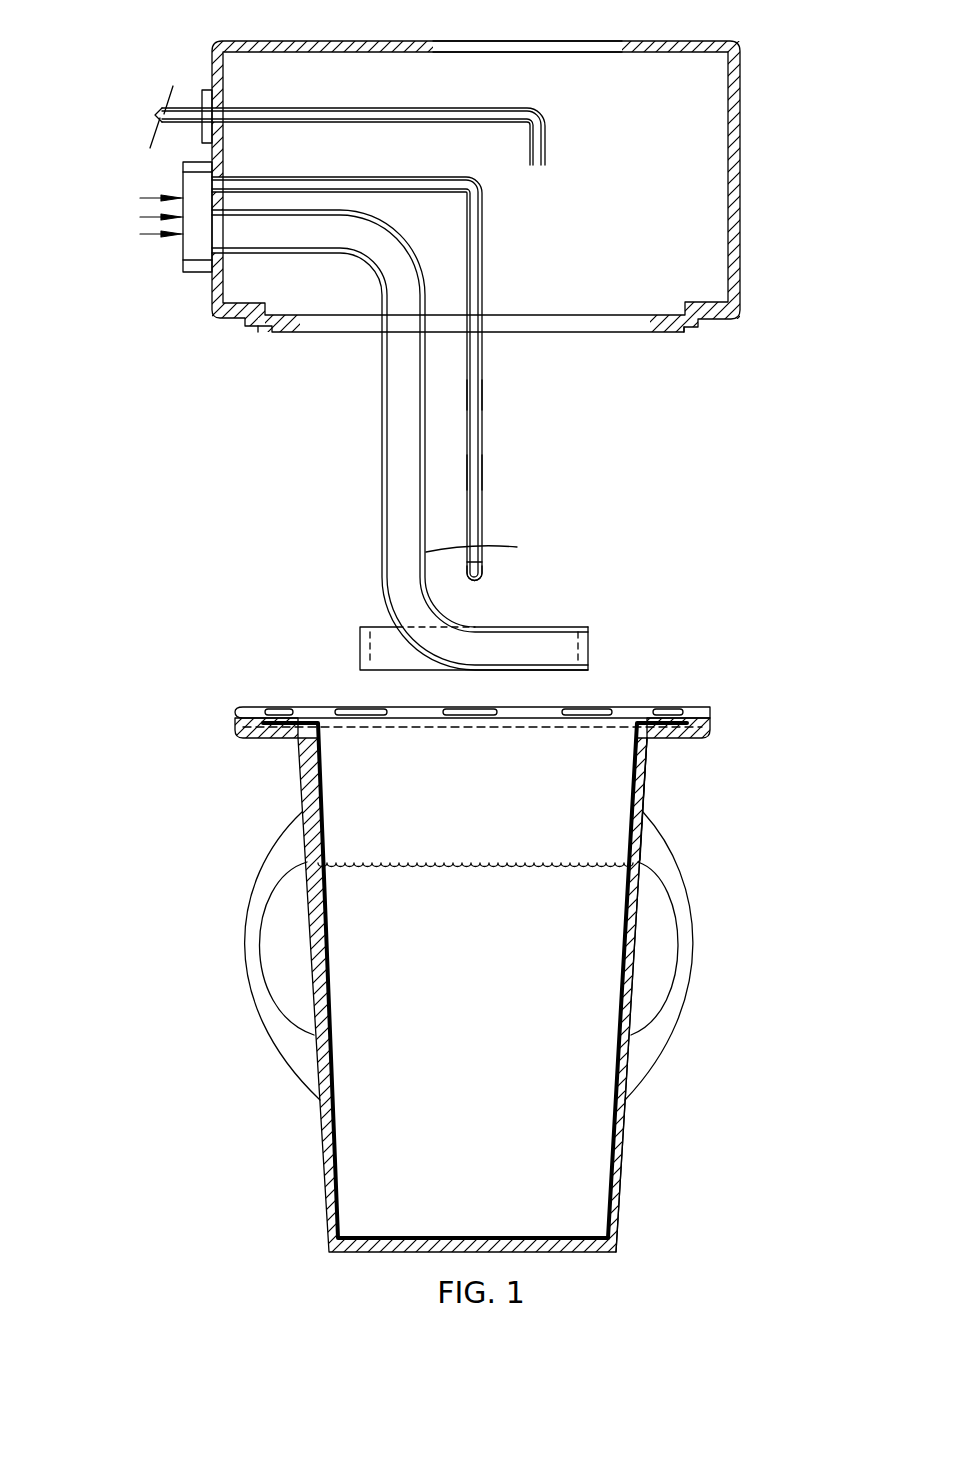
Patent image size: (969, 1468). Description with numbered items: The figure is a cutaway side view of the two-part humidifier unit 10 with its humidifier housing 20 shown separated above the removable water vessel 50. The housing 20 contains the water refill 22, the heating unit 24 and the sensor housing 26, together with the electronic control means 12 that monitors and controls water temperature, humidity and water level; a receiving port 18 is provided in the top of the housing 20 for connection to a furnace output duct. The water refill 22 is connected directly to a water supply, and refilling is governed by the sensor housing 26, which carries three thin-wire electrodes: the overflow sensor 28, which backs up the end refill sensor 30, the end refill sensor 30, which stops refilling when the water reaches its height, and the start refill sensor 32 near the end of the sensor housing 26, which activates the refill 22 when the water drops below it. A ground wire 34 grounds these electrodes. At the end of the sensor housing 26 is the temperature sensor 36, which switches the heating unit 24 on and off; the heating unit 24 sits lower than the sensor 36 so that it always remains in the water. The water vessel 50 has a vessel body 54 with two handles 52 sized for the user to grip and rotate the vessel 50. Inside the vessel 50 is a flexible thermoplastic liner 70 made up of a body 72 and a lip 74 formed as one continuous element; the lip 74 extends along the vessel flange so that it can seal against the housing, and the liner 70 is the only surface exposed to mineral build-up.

The humidifier unit 10 is at (123, 152).
The electronic control means 12 is at (193, 242).
The receiving port 18 is at (441, 45).
The humidifier housing 20 is at (742, 183).
The water refill 22 is at (547, 127).
The heating unit 24 is at (400, 544).
The sensor housing 26 is at (484, 347).
The overflow sensor 28 is at (484, 395).
The end refill sensor 30 is at (484, 472).
The start refill sensor 32 is at (517, 547).
The ground wire 34 is at (440, 548).
The temperature sensor 36 is at (478, 583).
The water vessel 50 is at (323, 1198).
The handles 52 is at (248, 970).
The vessel body 54 is at (618, 1176).
The liner 70 is at (645, 790).
The body 72 is at (623, 993).
The lip 74 is at (702, 707).